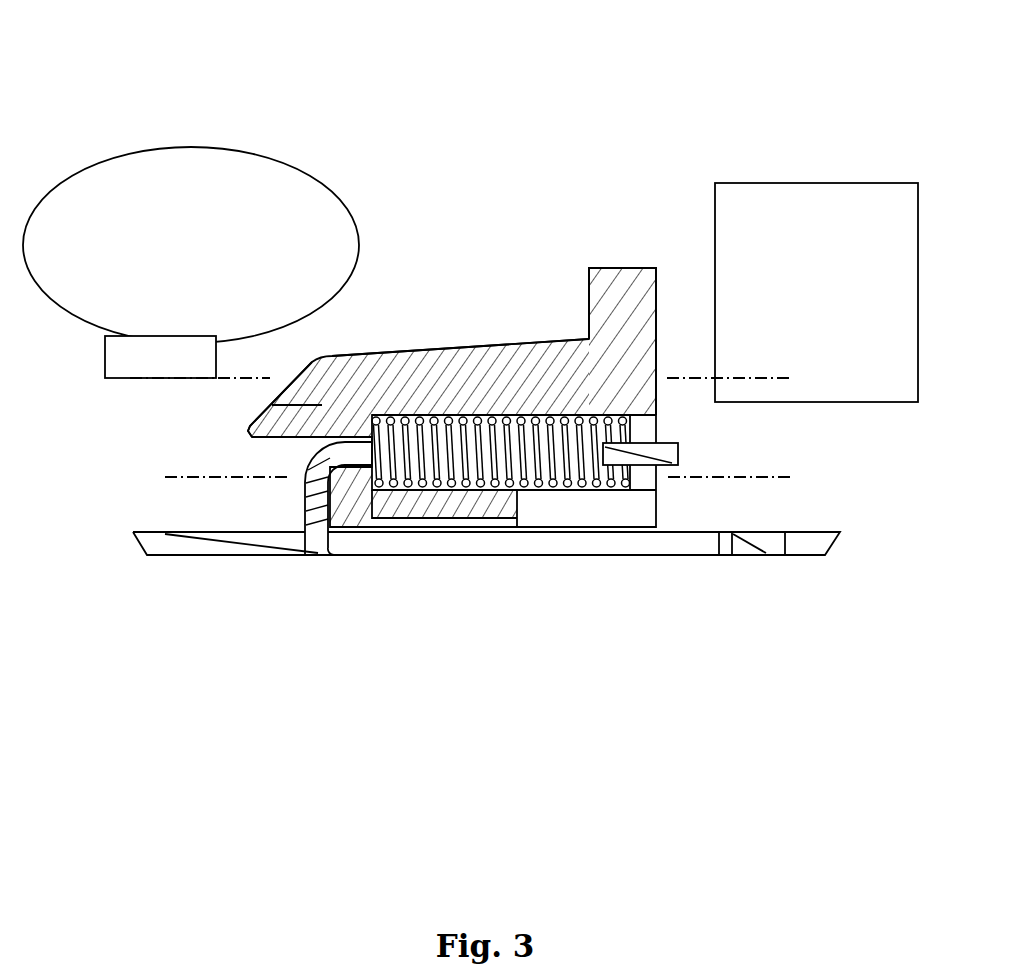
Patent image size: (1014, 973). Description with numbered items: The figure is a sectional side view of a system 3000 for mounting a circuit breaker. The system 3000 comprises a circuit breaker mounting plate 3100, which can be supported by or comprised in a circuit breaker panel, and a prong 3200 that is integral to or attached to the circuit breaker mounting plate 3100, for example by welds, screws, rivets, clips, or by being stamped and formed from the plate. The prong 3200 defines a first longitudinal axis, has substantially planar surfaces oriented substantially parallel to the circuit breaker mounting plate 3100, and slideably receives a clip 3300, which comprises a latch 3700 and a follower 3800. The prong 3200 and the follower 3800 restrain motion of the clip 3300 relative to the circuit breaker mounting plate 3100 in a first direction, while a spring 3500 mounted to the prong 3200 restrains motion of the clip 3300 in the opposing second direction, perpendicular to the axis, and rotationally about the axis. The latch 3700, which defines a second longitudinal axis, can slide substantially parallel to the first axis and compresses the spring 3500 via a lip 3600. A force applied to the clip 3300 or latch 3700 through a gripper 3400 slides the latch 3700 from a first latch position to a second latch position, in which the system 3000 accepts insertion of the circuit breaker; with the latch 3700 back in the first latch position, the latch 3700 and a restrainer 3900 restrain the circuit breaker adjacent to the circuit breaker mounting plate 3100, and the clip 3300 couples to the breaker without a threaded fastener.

The system 3000 is at (242, 44).
The circuit breaker mounting plate 3100 is at (486, 560).
The prong 3200 is at (305, 513).
The clip 3300 is at (433, 350).
The gripper 3400 is at (619, 265).
The spring 3500 is at (628, 421).
The lip 3600 is at (365, 418).
The latch 3700 is at (382, 352).
The follower 3800 is at (367, 502).
The restrainer 3900 is at (262, 411).